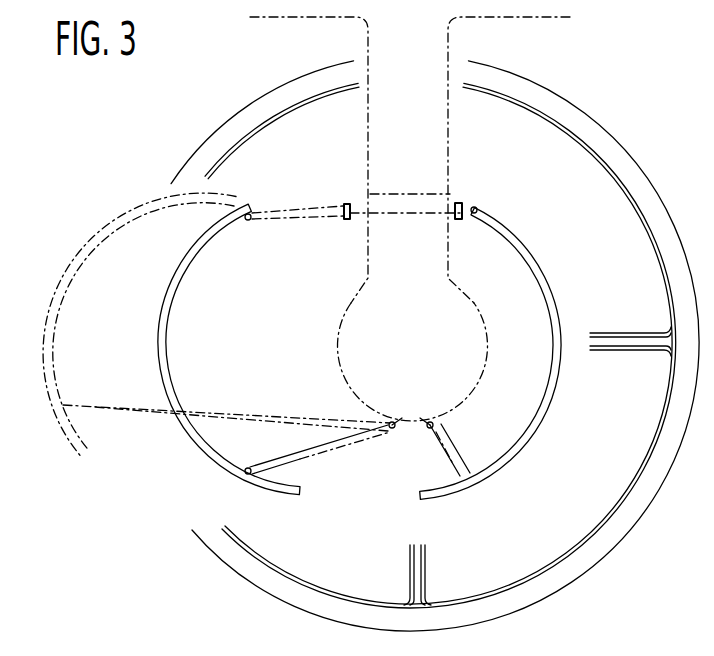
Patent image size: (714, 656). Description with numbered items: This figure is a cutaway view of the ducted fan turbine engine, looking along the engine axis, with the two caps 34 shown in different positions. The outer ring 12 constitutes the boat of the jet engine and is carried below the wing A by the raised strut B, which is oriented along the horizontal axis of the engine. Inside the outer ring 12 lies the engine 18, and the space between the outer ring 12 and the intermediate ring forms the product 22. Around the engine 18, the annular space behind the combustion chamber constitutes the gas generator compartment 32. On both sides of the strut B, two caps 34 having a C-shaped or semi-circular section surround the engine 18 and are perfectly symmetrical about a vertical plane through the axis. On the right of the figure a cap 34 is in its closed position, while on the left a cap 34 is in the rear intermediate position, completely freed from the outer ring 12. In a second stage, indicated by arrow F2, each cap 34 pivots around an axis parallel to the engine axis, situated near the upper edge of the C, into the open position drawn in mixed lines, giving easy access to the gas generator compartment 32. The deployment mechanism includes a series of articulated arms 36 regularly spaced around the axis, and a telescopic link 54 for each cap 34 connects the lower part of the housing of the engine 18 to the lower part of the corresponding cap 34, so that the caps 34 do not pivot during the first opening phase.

The outer ring 12 is at (272, 601).
The engine 18 is at (413, 362).
The product 22 is at (632, 256).
The gas generator compartment 32 is at (531, 346).
The caps 34 is at (163, 342).
The articulated arms 36 is at (325, 182).
The telescopic link 54 is at (307, 430).
The wing A is at (297, 16).
The strut B is at (450, 153).
The arrow F2 is at (165, 216).